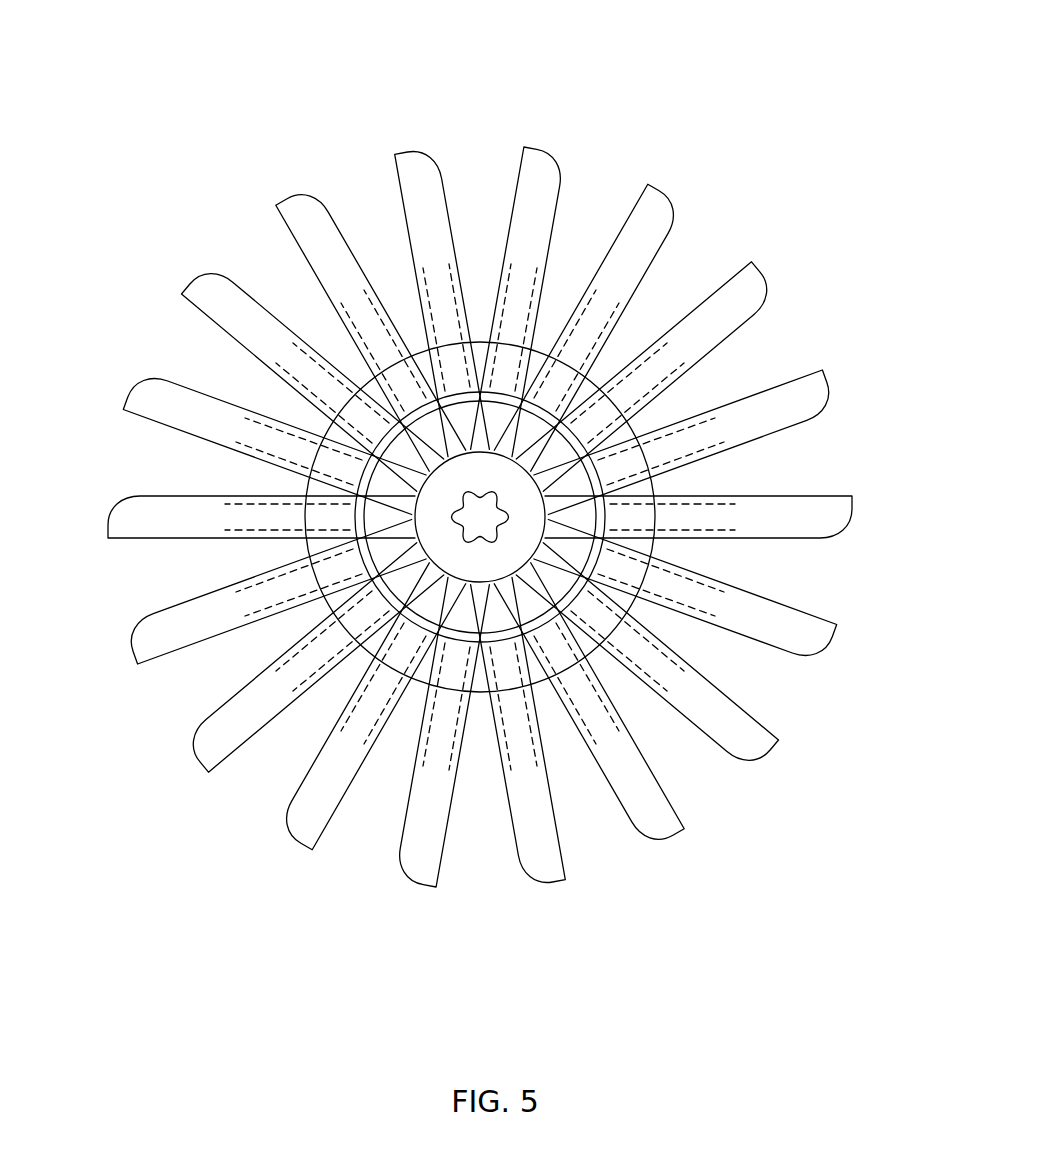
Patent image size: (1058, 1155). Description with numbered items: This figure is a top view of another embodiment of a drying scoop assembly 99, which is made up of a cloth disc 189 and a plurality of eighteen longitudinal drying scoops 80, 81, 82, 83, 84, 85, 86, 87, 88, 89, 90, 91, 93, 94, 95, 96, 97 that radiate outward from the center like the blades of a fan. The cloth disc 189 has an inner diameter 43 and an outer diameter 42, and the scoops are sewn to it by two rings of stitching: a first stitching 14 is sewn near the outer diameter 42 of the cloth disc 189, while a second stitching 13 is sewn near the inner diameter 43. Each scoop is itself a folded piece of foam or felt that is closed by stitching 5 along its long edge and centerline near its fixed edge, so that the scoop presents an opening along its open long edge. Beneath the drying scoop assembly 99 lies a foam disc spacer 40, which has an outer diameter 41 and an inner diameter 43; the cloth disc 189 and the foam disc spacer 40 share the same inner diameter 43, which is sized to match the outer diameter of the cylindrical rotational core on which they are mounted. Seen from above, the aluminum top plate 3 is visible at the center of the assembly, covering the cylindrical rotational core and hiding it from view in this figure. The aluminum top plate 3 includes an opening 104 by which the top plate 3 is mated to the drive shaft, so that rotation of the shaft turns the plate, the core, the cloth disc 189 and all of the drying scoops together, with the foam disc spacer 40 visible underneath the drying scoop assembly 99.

The aluminum top plate 3 is at (566, 549).
The stitching 5 is at (304, 315).
The second stitching 13 is at (503, 558).
The first stitching 14 is at (572, 549).
The foam disc spacer 40 is at (417, 682).
The outer diameter of foam disc spacer 41 is at (478, 625).
The outer diameter of cloth disc 42 is at (483, 520).
The inner diameter 43 is at (427, 533).
The longitudinal drying scoop 80 is at (537, 152).
The longitudinal drying scoop 81 is at (658, 200).
The longitudinal drying scoop 82 is at (752, 270).
The longitudinal drying scoop 83 is at (822, 372).
The longitudinal drying scoop 84 is at (846, 512).
The longitudinal drying scoop 85 is at (835, 628).
The longitudinal drying scoop 86 is at (757, 747).
The longitudinal drying scoop 87 is at (660, 823).
The longitudinal drying scoop 88 is at (552, 867).
The longitudinal drying scoop 89 is at (425, 867).
The longitudinal drying scoop 90 is at (298, 827).
The longitudinal drying scoop 91 is at (215, 735).
The longitudinal drying scoop 93 is at (133, 512).
The longitudinal drying scoop 94 is at (160, 390).
The longitudinal drying scoop 95 is at (210, 280).
The longitudinal drying scoop 96 is at (315, 212).
The longitudinal drying scoop 97 is at (412, 158).
The drying scoop assembly 99 is at (593, 250).
The opening 104 is at (690, 665).
The cloth disc 189 is at (543, 460).